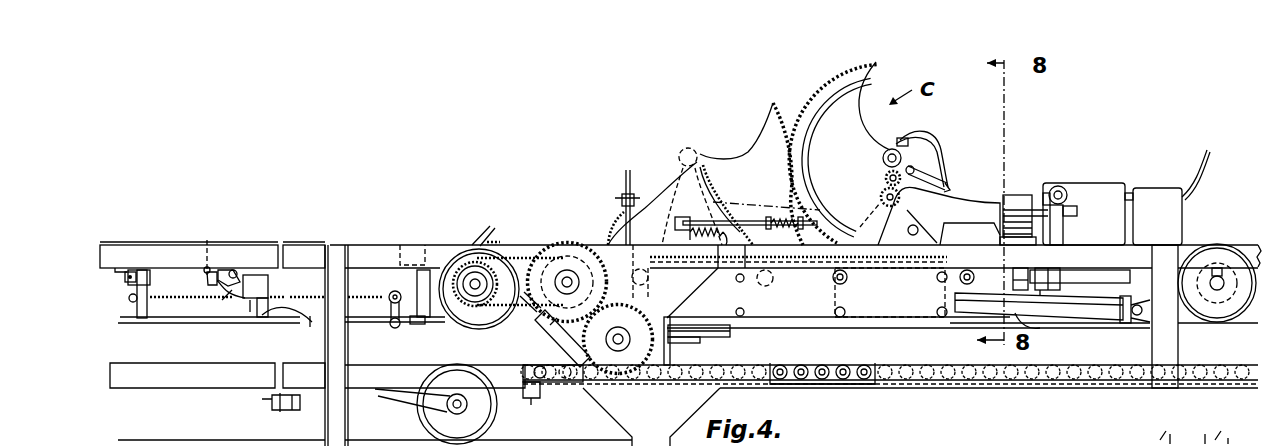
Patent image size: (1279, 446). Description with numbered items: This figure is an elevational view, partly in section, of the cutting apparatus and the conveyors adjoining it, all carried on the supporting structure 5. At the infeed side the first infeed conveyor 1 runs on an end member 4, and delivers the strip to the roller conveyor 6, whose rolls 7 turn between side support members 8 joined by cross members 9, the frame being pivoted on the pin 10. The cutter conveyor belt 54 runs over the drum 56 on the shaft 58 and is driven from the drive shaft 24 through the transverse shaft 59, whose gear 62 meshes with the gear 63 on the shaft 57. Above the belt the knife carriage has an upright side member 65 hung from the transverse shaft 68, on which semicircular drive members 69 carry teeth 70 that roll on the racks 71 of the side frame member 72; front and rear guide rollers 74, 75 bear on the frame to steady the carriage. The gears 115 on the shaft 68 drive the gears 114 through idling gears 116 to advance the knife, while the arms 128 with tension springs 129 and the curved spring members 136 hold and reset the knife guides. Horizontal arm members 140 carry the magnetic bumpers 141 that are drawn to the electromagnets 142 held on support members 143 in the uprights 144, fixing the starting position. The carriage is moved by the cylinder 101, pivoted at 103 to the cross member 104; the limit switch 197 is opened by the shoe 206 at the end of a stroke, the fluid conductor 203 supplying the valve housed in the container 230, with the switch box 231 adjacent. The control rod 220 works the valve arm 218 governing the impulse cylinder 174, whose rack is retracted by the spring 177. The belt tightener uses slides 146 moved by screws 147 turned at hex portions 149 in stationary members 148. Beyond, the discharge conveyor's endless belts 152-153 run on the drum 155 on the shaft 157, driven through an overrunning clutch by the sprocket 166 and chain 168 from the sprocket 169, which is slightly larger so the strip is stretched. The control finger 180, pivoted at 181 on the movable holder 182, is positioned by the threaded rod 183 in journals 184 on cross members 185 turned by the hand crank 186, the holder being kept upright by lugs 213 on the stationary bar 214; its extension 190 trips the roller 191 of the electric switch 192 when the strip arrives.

The first infeed conveyor 1 is at (128, 362).
The end member 4 is at (428, 424).
The supporting structure 5 is at (1165, 262).
The roller conveyor 6 is at (835, 386).
The rolls 7 is at (790, 362).
The side support members 8 is at (775, 386).
The end or cross members 9 is at (540, 337).
The pivot pin 10 is at (535, 400).
The drive shaft 24 is at (703, 341).
The conveyor belt 54 is at (775, 322).
The drum 56 is at (1232, 318).
The shaft 57 is at (570, 270).
The shaft 58 is at (1223, 268).
The transverse shaft 59 is at (617, 331).
The gear 62 is at (671, 352).
The gear 63 is at (558, 246).
The carriage side member 65 is at (890, 312).
The transverse shaft 68 is at (882, 158).
The drive or semicircular rack members 69 is at (768, 112).
The teeth 70 is at (828, 95).
The rack members 71 is at (678, 245).
The side frame member 72 is at (357, 250).
The front guide roller 74 is at (846, 282).
The rear guide roller 75 is at (967, 270).
The cylinder 101 is at (1085, 318).
The pivot 103 is at (1127, 298).
The cross member 104 is at (1140, 318).
The gears 114 is at (880, 196).
The gears 115 is at (902, 138).
The intermediate idling gears 116 is at (885, 178).
The arms 128 is at (940, 170).
The helical tension springs 129 is at (948, 185).
The curved spring members 136 is at (940, 143).
The arm members 140 is at (970, 205).
The bumpers 141 is at (1015, 194).
The electromagnets or solenoids 142 is at (1047, 192).
The support members 143 is at (1060, 186).
The uprights 144 is at (1065, 228).
The slides 146 is at (1095, 274).
The threaded rods or screws 147 is at (1014, 270).
The stationary members 148 is at (1034, 320).
The hex portions 149 is at (1050, 272).
The endless belts 152-153 is at (268, 320).
The drum 155 is at (478, 327).
The shaft 157 is at (472, 278).
The sprocket 166 is at (462, 276).
The chain 168 is at (522, 252).
The sprocket 169 is at (525, 302).
The cylinder 174 is at (560, 383).
The spring 177 is at (493, 222).
The control element or finger 180 is at (205, 240).
The pivot 181 is at (205, 278).
The traveling or movable holder 182 is at (222, 305).
The threaded rod 183 is at (360, 302).
The journals 184 is at (142, 320).
The cross members 185 is at (125, 279).
The hand crank 186 is at (420, 326).
The extension 190 is at (233, 268).
The roller 191 is at (240, 272).
The electric switch 192 is at (270, 285).
The limit switch 197 is at (735, 332).
The high pressure fluid conductor 203 is at (625, 178).
The shoe 206 is at (960, 325).
The lugs 213 is at (310, 328).
The stationary bar 214 is at (395, 330).
The arm 218 is at (692, 262).
The control bar or rod 220 is at (742, 212).
The housing or container 230 is at (1120, 186).
The box or container 231 is at (1165, 187).